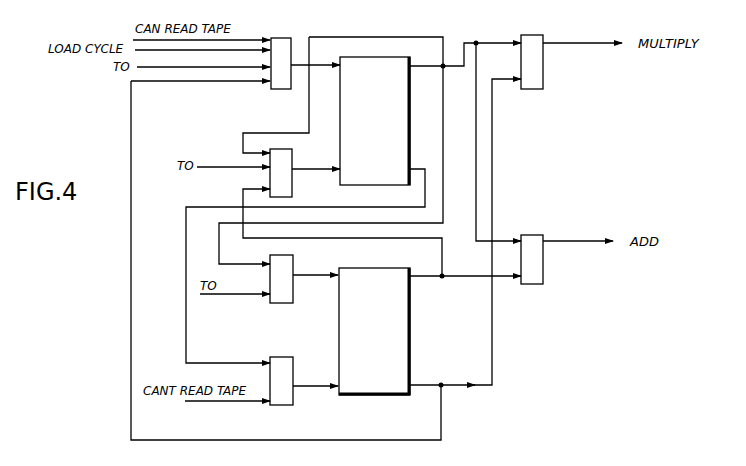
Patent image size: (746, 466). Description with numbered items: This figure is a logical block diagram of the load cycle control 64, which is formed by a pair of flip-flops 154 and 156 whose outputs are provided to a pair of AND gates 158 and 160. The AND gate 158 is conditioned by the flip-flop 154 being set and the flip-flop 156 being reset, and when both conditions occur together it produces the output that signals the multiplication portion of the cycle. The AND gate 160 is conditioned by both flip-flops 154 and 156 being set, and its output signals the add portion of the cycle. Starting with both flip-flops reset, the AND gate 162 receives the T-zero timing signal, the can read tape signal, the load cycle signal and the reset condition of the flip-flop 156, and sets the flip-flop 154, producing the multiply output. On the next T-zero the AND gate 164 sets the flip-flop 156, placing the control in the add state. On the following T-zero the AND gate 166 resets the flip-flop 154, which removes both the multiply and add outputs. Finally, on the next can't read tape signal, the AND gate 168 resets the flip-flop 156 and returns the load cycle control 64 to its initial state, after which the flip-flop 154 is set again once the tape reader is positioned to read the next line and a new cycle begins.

The load cycle control 64 is at (131, 247).
The flip-flop 154 is at (376, 75).
The flip-flop 156 is at (386, 368).
The AND gate 158 is at (543, 85).
The AND gate 160 is at (543, 238).
The AND gate 162 is at (291, 38).
The AND gate 164 is at (293, 262).
The AND gate 166 is at (292, 156).
The AND gate 168 is at (293, 364).